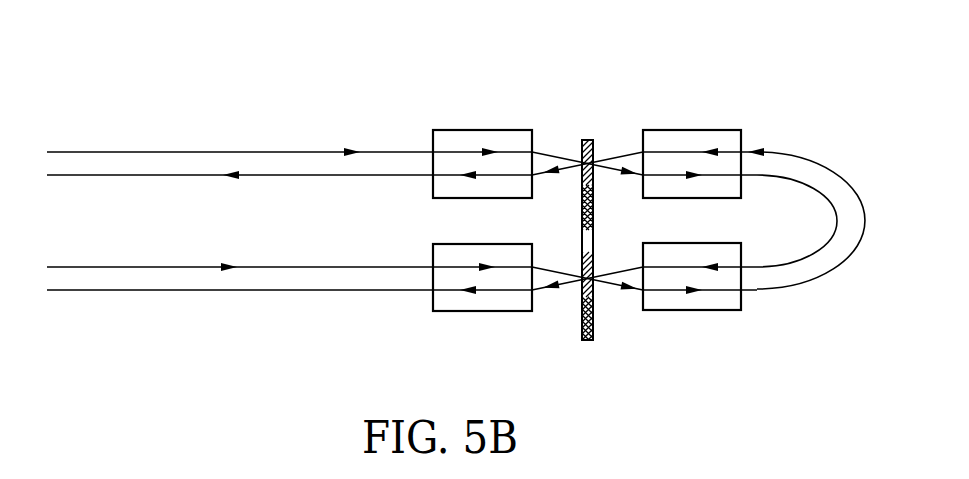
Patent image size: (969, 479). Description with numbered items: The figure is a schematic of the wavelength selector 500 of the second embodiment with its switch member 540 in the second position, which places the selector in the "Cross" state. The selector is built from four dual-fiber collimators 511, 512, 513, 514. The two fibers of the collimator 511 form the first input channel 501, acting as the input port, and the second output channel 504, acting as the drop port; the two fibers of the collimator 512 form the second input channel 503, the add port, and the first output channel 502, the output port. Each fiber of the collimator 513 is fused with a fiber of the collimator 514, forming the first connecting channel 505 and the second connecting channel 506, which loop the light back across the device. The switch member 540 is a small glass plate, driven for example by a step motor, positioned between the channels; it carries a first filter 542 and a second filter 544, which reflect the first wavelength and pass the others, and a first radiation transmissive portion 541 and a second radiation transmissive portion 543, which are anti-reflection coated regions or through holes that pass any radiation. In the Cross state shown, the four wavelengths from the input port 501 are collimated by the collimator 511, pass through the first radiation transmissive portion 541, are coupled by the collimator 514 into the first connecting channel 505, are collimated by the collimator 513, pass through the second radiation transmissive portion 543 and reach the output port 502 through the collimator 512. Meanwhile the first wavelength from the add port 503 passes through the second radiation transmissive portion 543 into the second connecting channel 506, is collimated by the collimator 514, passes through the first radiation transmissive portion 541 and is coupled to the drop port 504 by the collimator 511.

The wavelength selector 500 is at (102, 31).
The first input channel 501 is at (103, 152).
The first output channel 502 is at (103, 290).
The second input channel 503 is at (103, 267).
The second output channel 504 is at (103, 175).
The first connecting channel 505 is at (788, 178).
The second connecting channel 506 is at (829, 168).
The dual-fiber collimator 511 is at (482, 130).
The dual-fiber collimator 512 is at (482, 311).
The dual-fiber collimator 513 is at (693, 311).
The dual-fiber collimator 514 is at (693, 130).
The switch member 540 is at (587, 196).
The first radiation transmissive portion 541 is at (581, 150).
The first filter 542 is at (582, 214).
The second radiation transmissive portion 543 is at (582, 279).
The second filter 544 is at (593, 334).